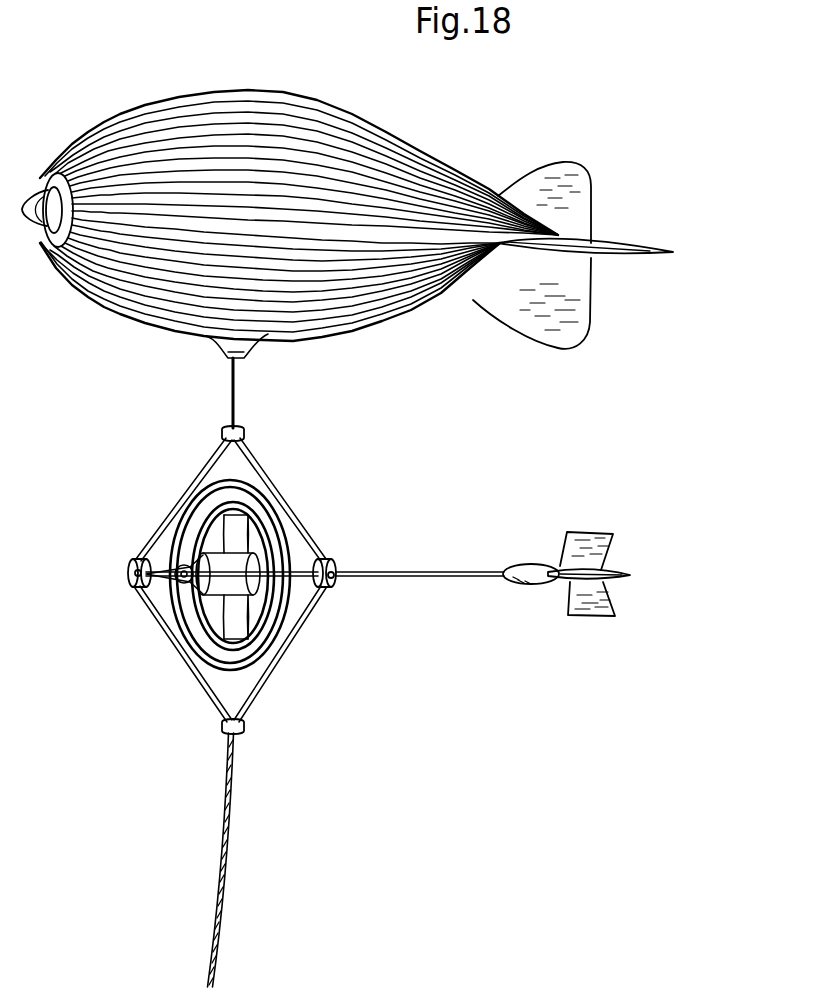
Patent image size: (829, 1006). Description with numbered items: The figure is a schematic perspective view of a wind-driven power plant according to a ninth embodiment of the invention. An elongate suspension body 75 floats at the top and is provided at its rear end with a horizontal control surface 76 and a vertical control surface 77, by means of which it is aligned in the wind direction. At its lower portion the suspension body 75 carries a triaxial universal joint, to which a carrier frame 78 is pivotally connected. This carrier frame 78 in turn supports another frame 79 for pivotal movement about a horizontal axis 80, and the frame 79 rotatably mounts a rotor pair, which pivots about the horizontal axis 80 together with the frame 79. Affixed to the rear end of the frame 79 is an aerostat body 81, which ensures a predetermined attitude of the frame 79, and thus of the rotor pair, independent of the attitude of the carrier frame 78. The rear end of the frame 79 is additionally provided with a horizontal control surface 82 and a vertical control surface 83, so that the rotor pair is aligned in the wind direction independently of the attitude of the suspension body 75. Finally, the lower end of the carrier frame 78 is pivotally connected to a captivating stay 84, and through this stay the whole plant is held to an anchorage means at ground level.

The elongate suspension body 75 is at (285, 107).
The horizontal control surface 76 is at (583, 201).
The vertical control surface 77 is at (633, 253).
The carrier frame 78 is at (167, 514).
The frame 79 is at (417, 580).
The horizontal axis 80 is at (333, 594).
The aerostat body 81 is at (527, 585).
The horizontal control surface 82 is at (613, 585).
The vertical control surface 83 is at (610, 540).
The captivating stay 84 is at (224, 892).